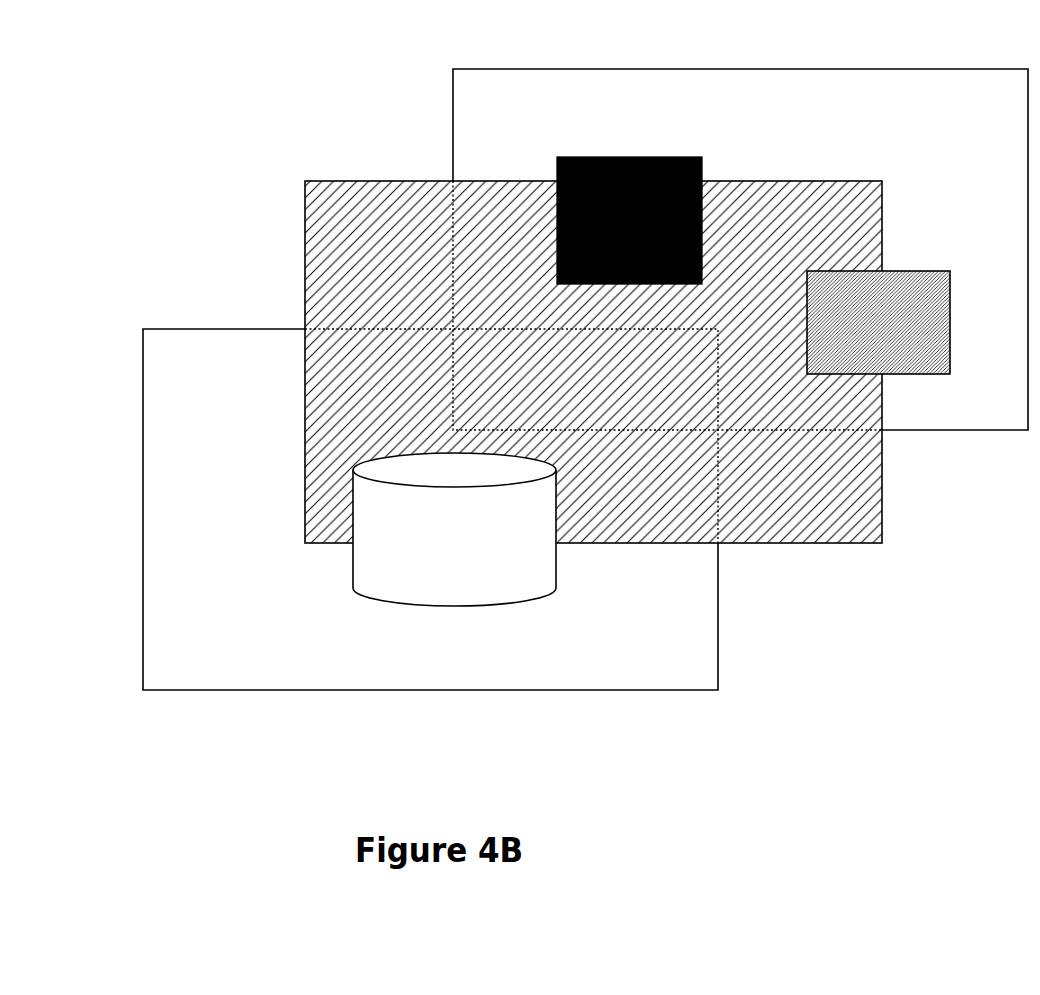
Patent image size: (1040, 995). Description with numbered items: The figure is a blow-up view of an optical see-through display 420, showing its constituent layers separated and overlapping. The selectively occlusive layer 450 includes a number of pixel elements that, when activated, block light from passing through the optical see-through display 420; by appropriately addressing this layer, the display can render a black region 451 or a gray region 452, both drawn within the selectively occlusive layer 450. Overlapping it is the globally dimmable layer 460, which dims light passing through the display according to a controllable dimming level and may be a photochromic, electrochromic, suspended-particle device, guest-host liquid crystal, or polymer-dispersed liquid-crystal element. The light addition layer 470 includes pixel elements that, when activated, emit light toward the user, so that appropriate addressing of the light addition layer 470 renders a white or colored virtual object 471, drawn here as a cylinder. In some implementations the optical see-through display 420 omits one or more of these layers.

The optical see-through display 420 is at (338, 67).
The selectively occlusive layer 450 is at (511, 111).
The black region 451 is at (622, 199).
The gray region 452 is at (933, 304).
The globally dimmable layer 460 is at (363, 227).
The light addition layer 470 is at (202, 376).
The virtual object 471 is at (534, 572).